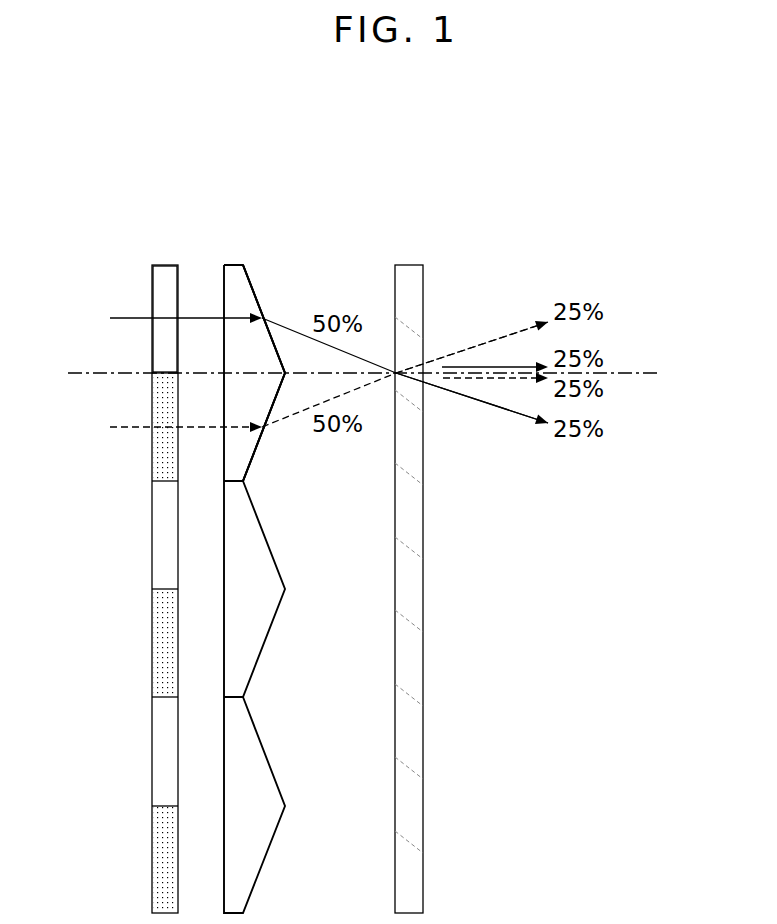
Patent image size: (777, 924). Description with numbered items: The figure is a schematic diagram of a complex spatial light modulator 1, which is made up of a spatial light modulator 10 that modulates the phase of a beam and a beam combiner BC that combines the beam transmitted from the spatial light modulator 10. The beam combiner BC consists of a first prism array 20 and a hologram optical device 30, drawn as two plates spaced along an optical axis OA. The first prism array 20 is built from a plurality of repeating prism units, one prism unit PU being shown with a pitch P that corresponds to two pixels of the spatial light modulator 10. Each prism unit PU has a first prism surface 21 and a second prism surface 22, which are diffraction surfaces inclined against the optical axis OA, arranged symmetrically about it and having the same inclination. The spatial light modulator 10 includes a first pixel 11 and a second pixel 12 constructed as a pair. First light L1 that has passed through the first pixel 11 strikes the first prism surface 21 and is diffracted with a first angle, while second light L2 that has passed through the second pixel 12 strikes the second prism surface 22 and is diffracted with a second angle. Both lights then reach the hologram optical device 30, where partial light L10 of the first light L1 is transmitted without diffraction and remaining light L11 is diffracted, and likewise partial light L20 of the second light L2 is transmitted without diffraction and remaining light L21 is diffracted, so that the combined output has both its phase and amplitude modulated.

The complex spatial light modulator 1 is at (645, 212).
The spatial light modulator 10 is at (165, 264).
The first pixel 11 is at (153, 291).
The second pixel 12 is at (153, 452).
The first prism array 20 is at (231, 264).
The first prism surface 21 is at (258, 297).
The second prism surface 22 is at (252, 458).
The prism unit PU is at (262, 348).
The pitch P is at (213, 481).
The hologram optical device 30 is at (409, 264).
The beam combiner BC is at (387, 182).
The optical axis OA is at (346, 375).
The first light L1 is at (312, 366).
The second light L2 is at (312, 380).
The partial light of the first light L10 is at (462, 396).
The remaining light of the first light L11 is at (518, 368).
The partial light of the second light L20 is at (475, 340).
The remaining light of the second light L21 is at (508, 382).